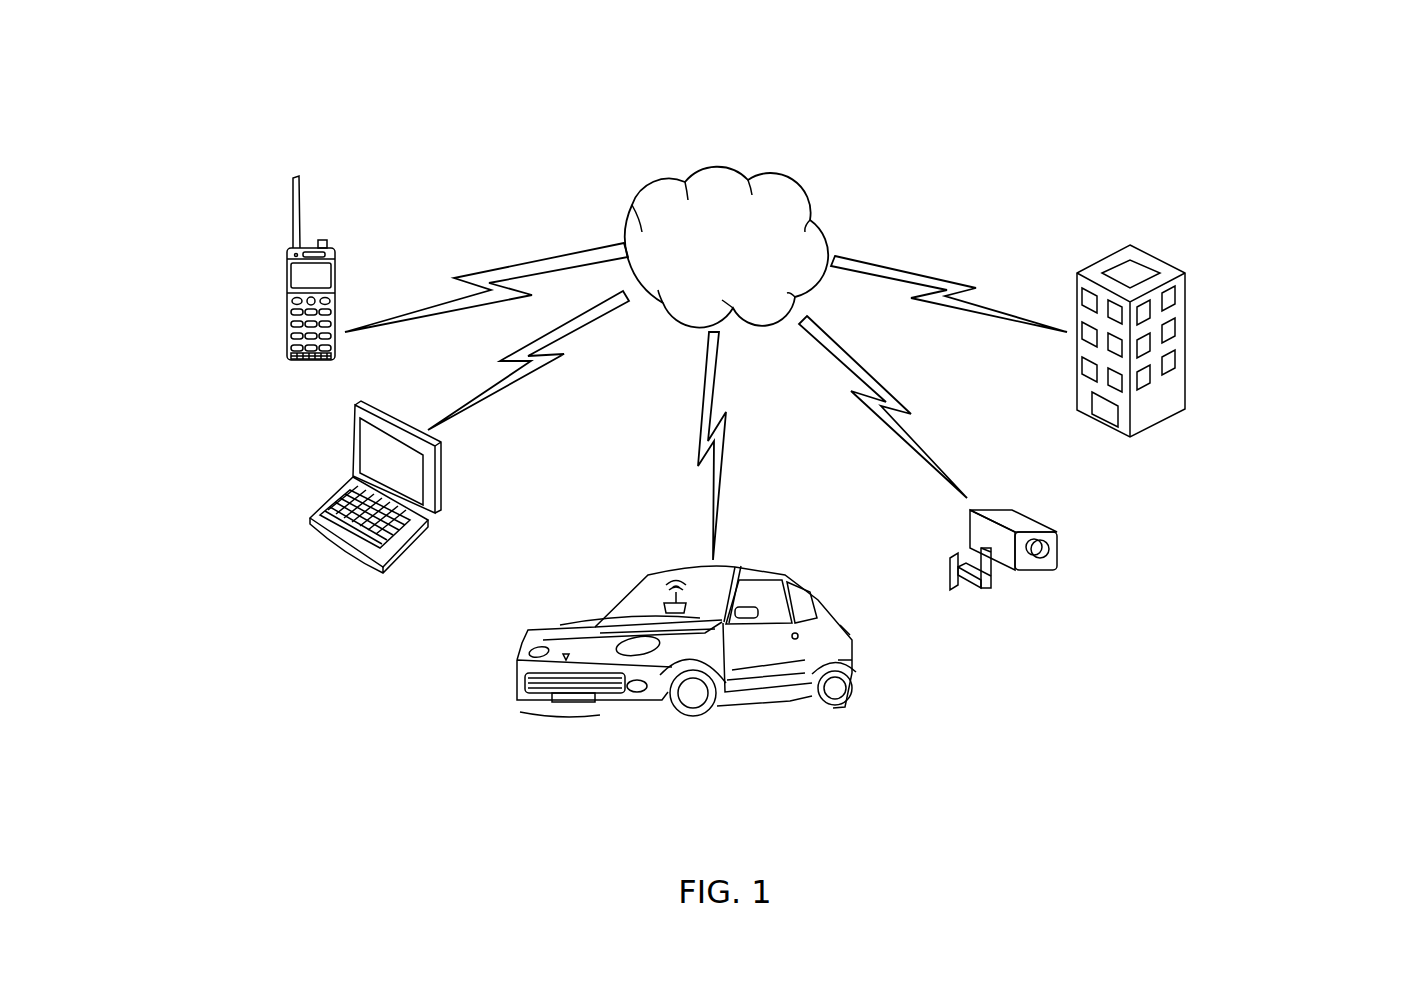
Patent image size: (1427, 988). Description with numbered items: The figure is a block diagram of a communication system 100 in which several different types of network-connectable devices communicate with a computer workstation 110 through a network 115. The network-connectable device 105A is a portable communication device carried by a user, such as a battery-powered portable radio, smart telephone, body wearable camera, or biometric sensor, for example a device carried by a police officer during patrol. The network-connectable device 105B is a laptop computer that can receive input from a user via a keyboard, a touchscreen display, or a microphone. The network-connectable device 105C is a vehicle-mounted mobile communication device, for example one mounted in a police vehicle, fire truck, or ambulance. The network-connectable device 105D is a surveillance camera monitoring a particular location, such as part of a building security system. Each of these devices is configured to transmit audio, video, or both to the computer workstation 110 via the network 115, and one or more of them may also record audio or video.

The communication system 100 is at (352, 62).
The network-connectable device 105A is at (283, 306).
The network-connectable device 105B is at (330, 545).
The network-connectable device 105C is at (612, 712).
The network-connectable device 105D is at (1050, 573).
The computer workstation 110 is at (1190, 343).
The network 115 is at (630, 212).